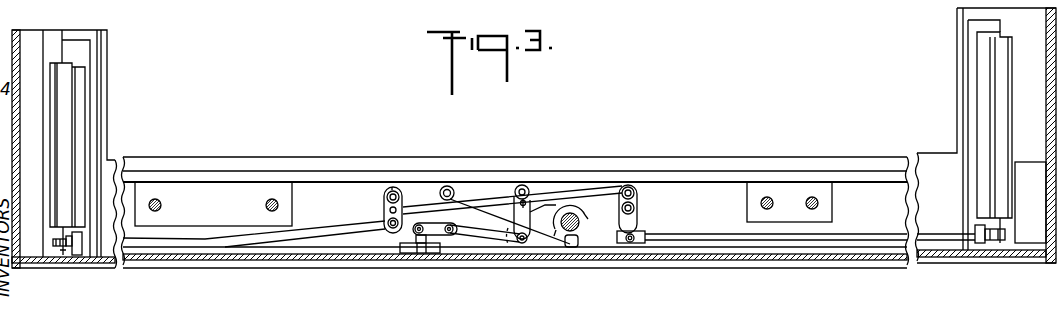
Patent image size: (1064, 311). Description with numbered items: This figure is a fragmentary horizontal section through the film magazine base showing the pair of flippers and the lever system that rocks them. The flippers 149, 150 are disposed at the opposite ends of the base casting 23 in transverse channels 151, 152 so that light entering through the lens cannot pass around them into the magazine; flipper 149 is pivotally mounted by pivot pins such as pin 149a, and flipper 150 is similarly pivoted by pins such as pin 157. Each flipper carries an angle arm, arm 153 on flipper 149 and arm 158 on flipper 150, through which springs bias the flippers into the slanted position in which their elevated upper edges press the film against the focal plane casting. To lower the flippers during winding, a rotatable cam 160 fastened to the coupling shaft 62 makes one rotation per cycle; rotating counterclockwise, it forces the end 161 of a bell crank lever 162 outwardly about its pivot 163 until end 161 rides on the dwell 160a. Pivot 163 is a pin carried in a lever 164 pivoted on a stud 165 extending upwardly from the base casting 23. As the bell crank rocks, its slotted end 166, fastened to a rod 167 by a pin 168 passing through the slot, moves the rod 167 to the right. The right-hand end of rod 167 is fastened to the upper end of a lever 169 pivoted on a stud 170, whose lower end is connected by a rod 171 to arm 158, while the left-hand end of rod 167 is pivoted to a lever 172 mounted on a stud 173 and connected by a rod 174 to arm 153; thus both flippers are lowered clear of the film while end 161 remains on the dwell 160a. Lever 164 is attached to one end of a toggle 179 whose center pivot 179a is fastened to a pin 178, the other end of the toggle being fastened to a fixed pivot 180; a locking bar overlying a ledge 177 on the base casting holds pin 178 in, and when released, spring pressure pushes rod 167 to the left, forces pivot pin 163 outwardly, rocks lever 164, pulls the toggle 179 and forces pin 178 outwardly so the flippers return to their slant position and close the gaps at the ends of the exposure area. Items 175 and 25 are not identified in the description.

The transverse channel 151 is at (90, 32).
The flipper 149 is at (90, 78).
The pivot pin 149a is at (82, 263).
The angle arm 153 is at (77, 263).
The adjusting bolt 175 is at (67, 237).
The base casting 23 is at (182, 263).
The ledge 177 is at (607, 262).
The rod 171 is at (840, 235).
The rod 174 is at (262, 243).
The lever 172 is at (384, 198).
The stud 173 is at (393, 188).
The fixed pivot 180 is at (388, 231).
The stud 165 is at (448, 186).
The slotted end 166 is at (513, 186).
The rod 167 is at (570, 193).
The pin 168 is at (537, 207).
The pivot 163 is at (524, 247).
The bell crank lever 162 is at (543, 246).
The rotatable cam 160 is at (582, 218).
The dwell 160a is at (545, 226).
The shaft 62 is at (580, 230).
The end of bell crank lever 161 is at (570, 248).
The lever 164 is at (482, 237).
The toggle 179 is at (448, 225).
The center pivot 179a is at (417, 232).
The pin 178 is at (427, 255).
The lever 169 is at (637, 224).
The stud 170 is at (637, 208).
The pivot pin 157 is at (985, 247).
The angle arm 158 is at (993, 243).
The right window frame 25 is at (1046, 40).
The transverse channel 152 is at (970, 14).
The flipper 150 is at (973, 65).